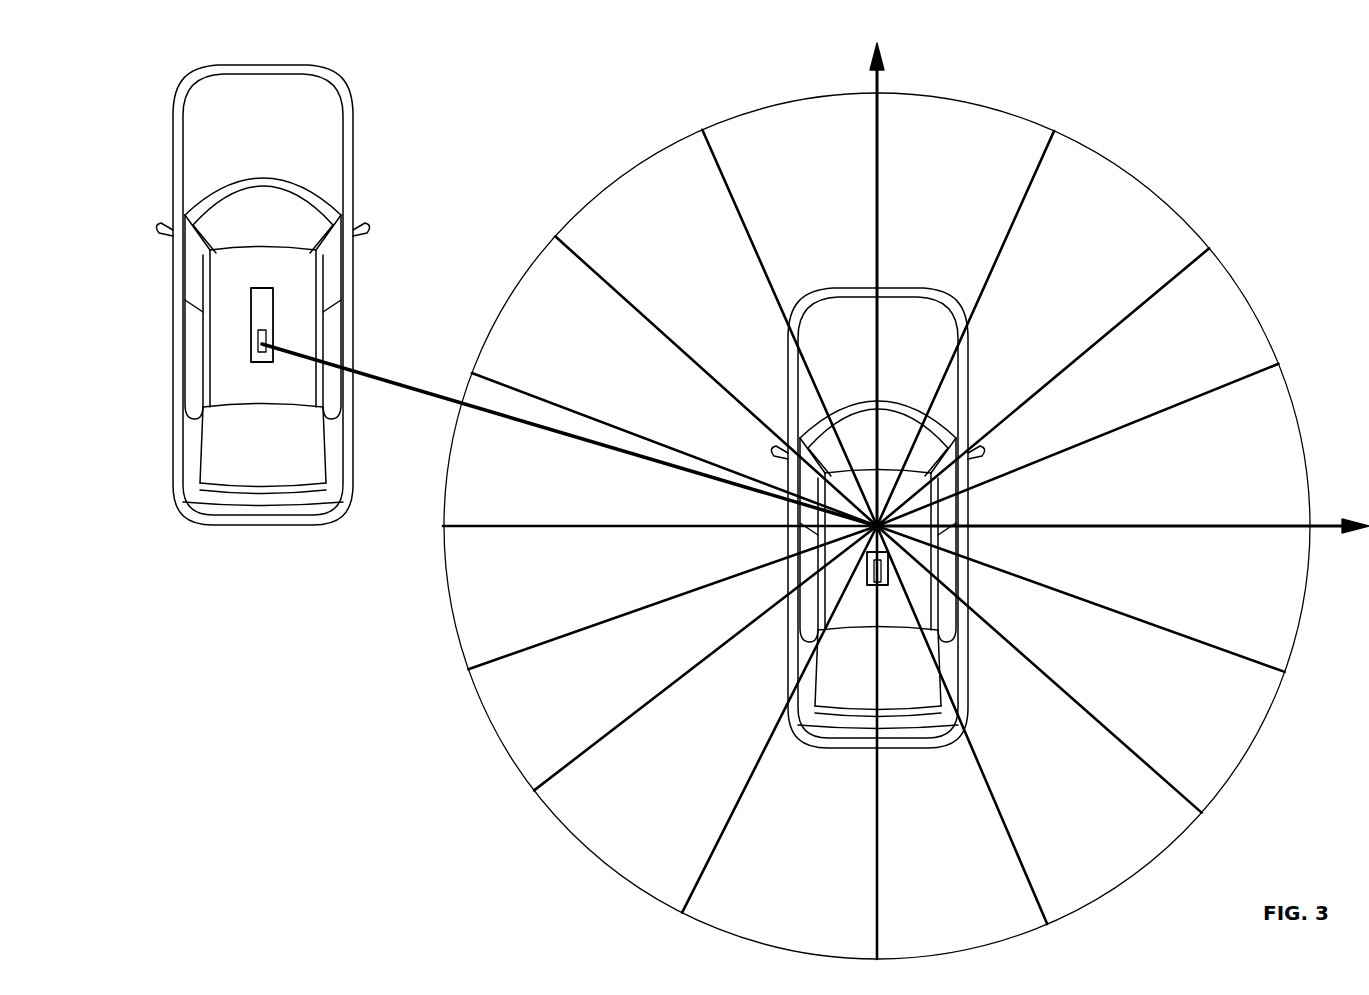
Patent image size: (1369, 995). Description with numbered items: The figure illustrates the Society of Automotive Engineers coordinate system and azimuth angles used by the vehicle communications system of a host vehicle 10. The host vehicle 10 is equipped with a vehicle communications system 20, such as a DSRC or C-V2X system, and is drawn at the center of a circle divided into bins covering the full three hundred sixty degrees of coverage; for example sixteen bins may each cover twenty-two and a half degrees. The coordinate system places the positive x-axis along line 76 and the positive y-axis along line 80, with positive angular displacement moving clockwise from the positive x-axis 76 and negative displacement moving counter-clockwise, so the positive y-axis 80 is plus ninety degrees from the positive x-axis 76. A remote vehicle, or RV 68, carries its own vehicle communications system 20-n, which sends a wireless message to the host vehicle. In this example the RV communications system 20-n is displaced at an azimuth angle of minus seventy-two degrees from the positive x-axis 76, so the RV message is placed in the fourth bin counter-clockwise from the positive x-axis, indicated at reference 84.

The vehicle 10 is at (777, 376).
The vehicle communications system 20 is at (878, 588).
The vehicle communications system of the RV 20-n is at (263, 352).
The RV 68 is at (327, 103).
The positive x-axis 76 is at (875, 204).
The positive y-axis 80 is at (1263, 522).
The bin 84 is at (498, 477).